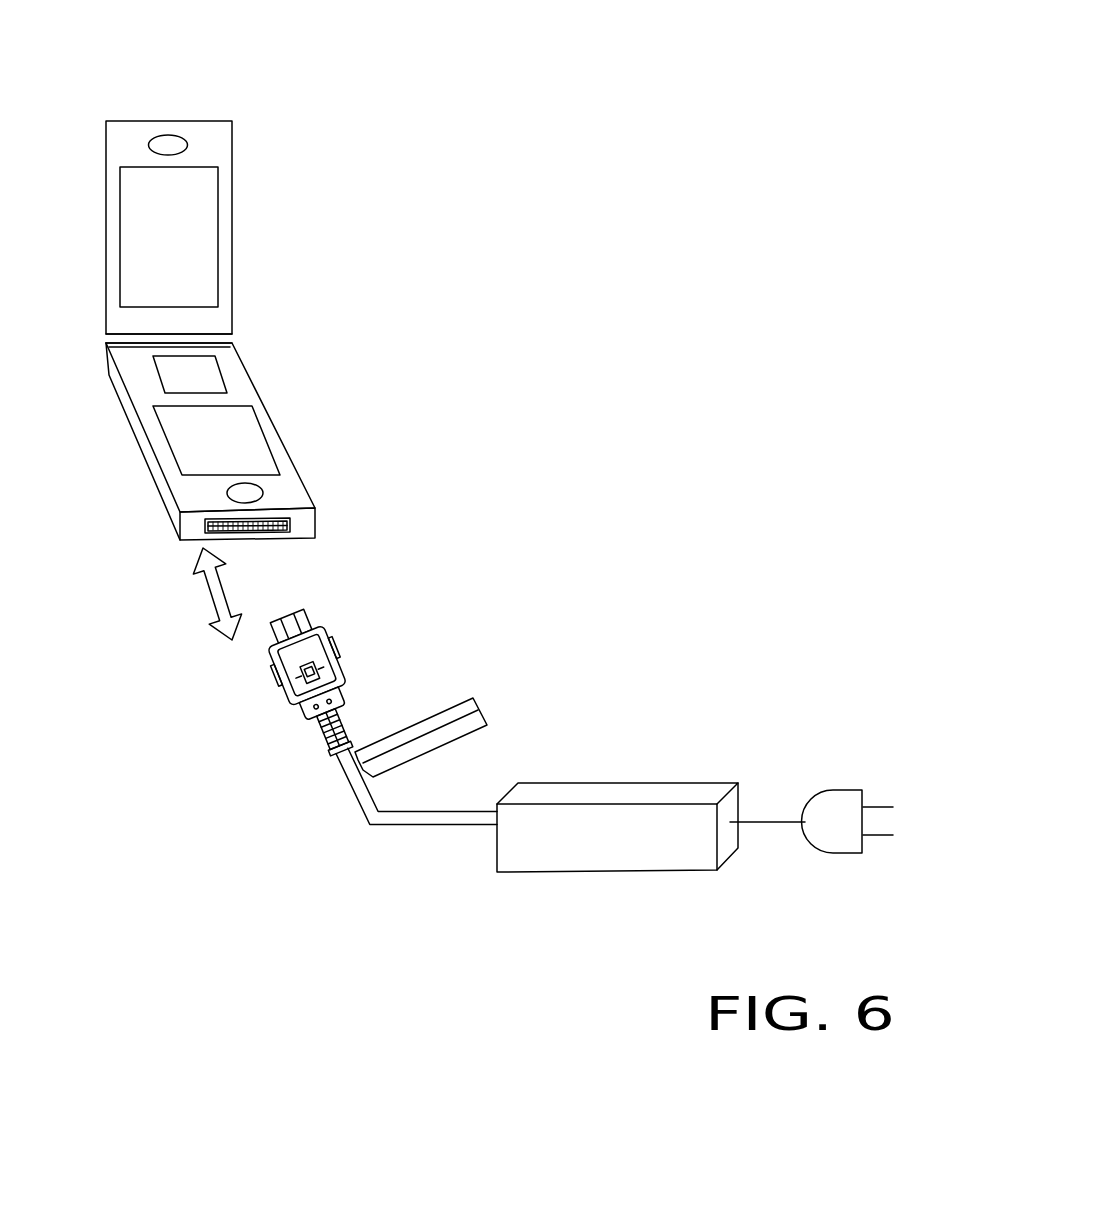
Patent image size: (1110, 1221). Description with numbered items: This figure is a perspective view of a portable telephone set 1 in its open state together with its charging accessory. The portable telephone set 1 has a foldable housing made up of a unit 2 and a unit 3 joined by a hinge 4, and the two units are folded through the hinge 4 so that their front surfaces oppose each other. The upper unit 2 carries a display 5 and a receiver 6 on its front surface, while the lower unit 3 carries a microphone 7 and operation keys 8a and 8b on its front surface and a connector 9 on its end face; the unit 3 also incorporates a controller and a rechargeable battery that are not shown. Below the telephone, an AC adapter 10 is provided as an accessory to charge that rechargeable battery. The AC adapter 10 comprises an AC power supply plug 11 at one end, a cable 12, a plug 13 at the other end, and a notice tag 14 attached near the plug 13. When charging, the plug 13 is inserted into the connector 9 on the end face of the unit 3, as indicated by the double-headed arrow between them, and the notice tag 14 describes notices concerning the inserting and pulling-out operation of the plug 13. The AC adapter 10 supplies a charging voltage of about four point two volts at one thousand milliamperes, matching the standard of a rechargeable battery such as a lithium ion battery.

The portable telephone set 1 is at (298, 355).
The unit 2 is at (232, 200).
The unit 3 is at (270, 415).
The hinge 4 is at (108, 340).
The display 5 is at (120, 193).
The receiver 6 is at (186, 136).
The microphone 7 is at (265, 485).
The operation keys 8a is at (162, 430).
The operation keys 8b is at (155, 372).
The connector 9 is at (275, 533).
The AC adapter 10 is at (575, 783).
The AC power supply plug 11 is at (833, 789).
The cable 12 is at (402, 826).
The plug 13 is at (303, 610).
The notice tag 14 is at (447, 708).